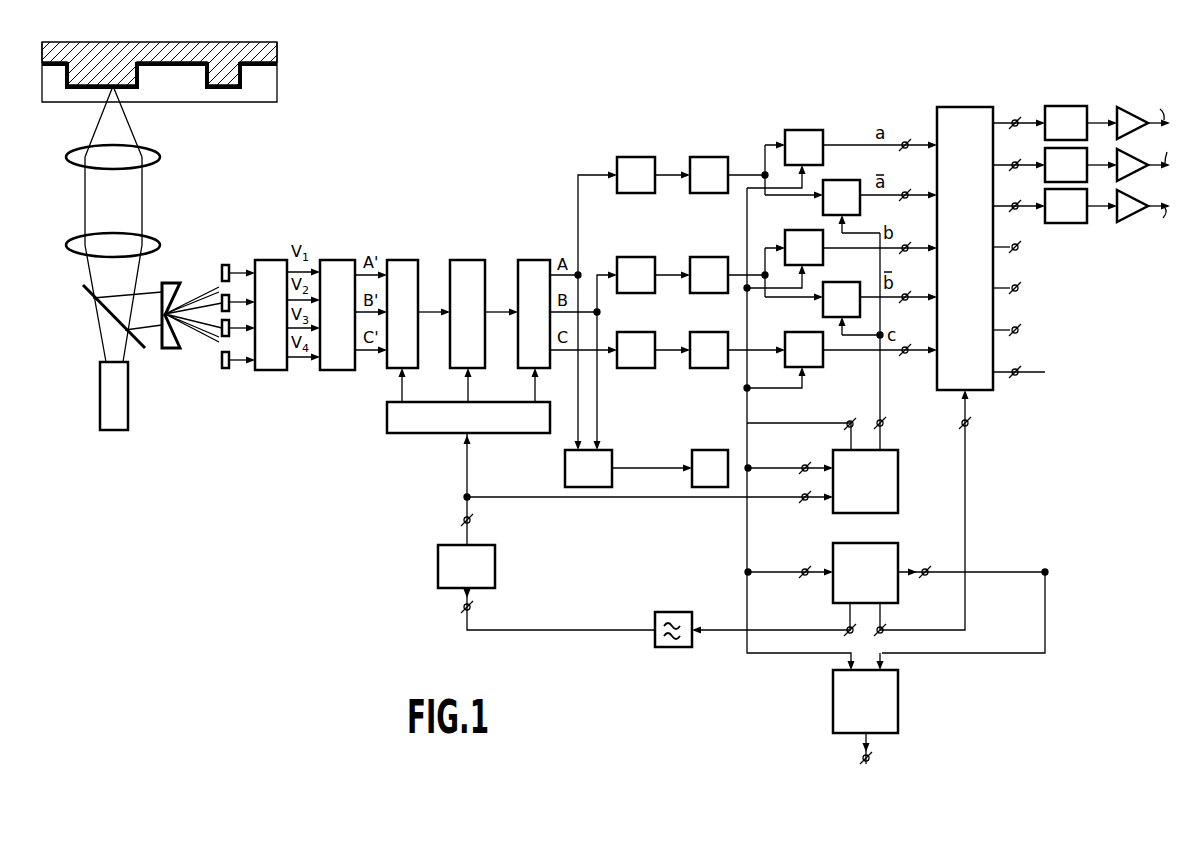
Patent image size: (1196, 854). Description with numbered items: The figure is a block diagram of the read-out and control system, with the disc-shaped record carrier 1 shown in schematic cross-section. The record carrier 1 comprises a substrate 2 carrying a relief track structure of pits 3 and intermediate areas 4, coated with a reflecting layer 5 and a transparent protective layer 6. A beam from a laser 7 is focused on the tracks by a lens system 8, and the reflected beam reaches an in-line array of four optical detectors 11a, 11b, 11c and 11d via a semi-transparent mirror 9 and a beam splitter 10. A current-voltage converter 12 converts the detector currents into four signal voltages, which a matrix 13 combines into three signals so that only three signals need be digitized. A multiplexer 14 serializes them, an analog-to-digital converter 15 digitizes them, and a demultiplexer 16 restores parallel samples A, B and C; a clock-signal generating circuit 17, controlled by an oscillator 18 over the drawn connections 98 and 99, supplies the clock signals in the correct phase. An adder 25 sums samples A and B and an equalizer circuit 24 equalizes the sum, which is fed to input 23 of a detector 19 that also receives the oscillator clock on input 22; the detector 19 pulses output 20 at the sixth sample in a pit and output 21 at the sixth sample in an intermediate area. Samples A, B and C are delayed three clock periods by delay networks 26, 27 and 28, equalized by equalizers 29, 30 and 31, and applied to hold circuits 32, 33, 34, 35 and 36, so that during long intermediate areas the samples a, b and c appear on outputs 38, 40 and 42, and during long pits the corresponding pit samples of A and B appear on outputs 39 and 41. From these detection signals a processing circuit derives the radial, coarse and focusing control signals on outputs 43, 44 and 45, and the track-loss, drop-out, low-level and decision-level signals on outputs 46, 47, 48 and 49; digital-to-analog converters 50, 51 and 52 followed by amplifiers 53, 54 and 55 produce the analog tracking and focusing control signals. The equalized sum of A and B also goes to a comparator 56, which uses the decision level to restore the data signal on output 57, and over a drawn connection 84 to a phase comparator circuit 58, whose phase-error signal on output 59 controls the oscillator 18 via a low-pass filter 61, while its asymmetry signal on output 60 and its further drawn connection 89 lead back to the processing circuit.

The record carrier 1 is at (285, 85).
The substrate 2 is at (270, 50).
The pits 3 is at (55, 70).
The intermediate areas 4 is at (83, 92).
The reflecting layer 5 is at (279, 64).
The transparent protective layer 6 is at (275, 94).
The laser 7 is at (100, 391).
The lens system 8 is at (168, 155).
The semi-transparent mirror 9 is at (115, 318).
The beam splitter 10 is at (168, 349).
The optical detector 11a is at (222, 266).
The optical detector 11b is at (222, 301).
The optical detector 11c is at (236, 318).
The optical detector 11d is at (222, 354).
The current-voltage converter 12 is at (273, 370).
The matrix 13 is at (338, 370).
The multiplexer 14 is at (400, 260).
The analog-to-digital converter 15 is at (466, 260).
The demultiplexer 16 is at (533, 260).
The clock-signal generating circuit 17 is at (387, 418).
The oscillator 18 is at (442, 545).
The detector 19 is at (898, 497).
The output 20 is at (884, 419).
The output 21 is at (847, 419).
The input 22 is at (802, 495).
The input 23 is at (802, 466).
The equalizer circuit 24 is at (710, 450).
The adder 25 is at (612, 458).
The delay network 26 is at (636, 157).
The delay network 27 is at (636, 257).
The delay network 28 is at (636, 332).
The equalizer 29 is at (709, 157).
The equalizer 30 is at (709, 257).
The equalizer 31 is at (709, 332).
The hold circuit 32 is at (804, 130).
The hold circuit 33 is at (841, 180).
The hold circuit 34 is at (804, 230).
The hold circuit 35 is at (841, 282).
The hold circuit 36 is at (804, 332).
The output 38 is at (909, 141).
The output 39 is at (909, 191).
The output 40 is at (909, 244).
The output 41 is at (909, 293).
The output 42 is at (909, 346).
The output 43 is at (1017, 118).
The output 44 is at (1018, 160).
The output 45 is at (1017, 201).
The output 46 is at (1020, 247).
The output 47 is at (1020, 288).
The output 48 is at (1020, 331).
The output 49 is at (1019, 370).
The digital-to-analog converter 50 is at (1083, 107).
The digital-to-analog converter 51 is at (1088, 160).
The digital-to-analog converter 52 is at (1088, 201).
The amplifier 53 is at (1125, 109).
The amplifier 54 is at (1127, 152).
The amplifier 55 is at (1127, 193).
The comparator 56 is at (898, 708).
The output 57 is at (861, 762).
The phase comparator circuit 58 is at (898, 553).
The output 59 is at (845, 626).
The output 60 is at (886, 626).
The low-pass filter 61 is at (673, 612).
The phase detector input line 84 is at (802, 568).
The phase detector output line 89 is at (929, 565).
The oscillator output line 98 is at (472, 606).
The oscillator control line 99 is at (472, 520).